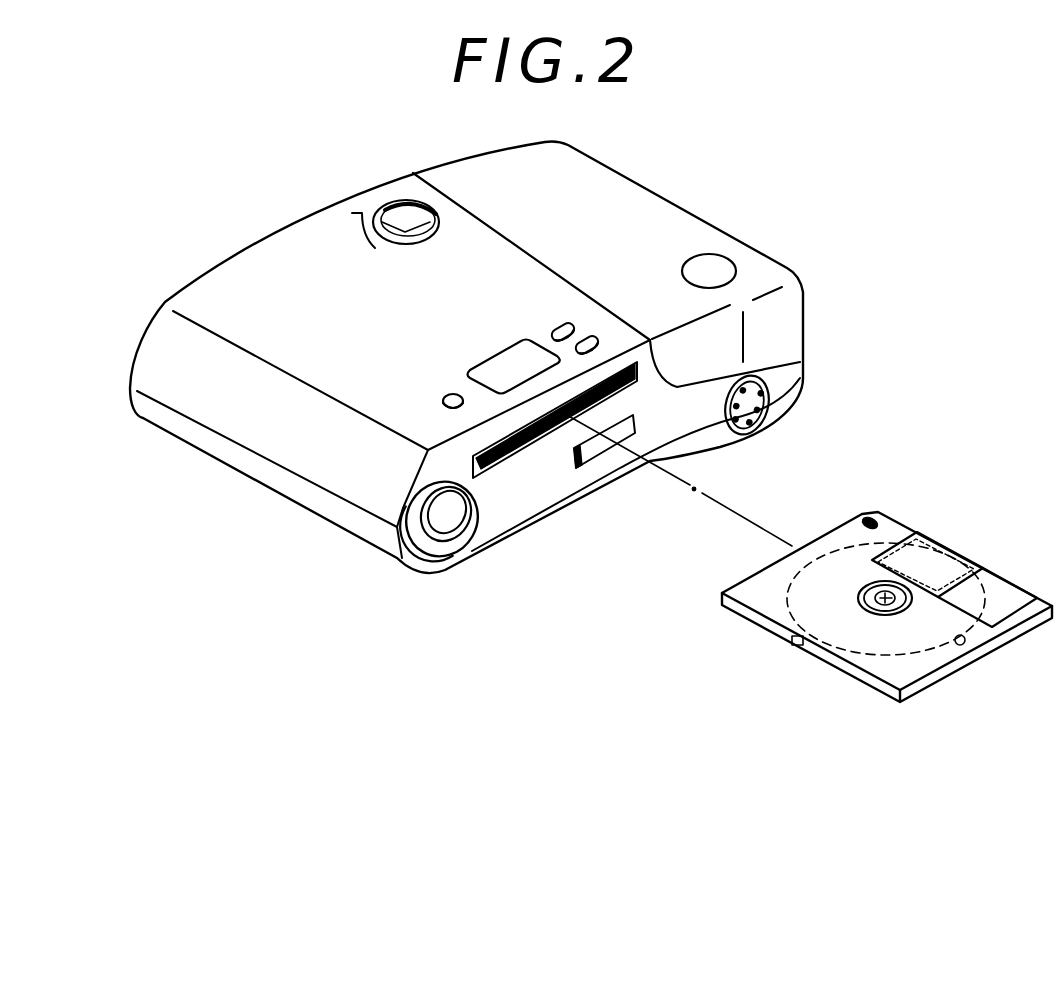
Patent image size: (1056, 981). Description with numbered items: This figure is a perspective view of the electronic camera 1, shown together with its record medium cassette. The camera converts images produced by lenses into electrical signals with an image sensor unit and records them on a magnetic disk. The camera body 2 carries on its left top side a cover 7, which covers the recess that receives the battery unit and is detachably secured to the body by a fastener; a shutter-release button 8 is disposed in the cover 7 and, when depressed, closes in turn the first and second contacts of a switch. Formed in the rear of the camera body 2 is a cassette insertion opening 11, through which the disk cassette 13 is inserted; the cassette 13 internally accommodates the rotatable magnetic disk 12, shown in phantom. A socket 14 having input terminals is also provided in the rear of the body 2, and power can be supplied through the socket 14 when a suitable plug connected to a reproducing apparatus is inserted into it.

The electronic camera 1 is at (869, 285).
The camera body 2 is at (318, 232).
The cover 7 is at (672, 208).
The shutter-release button 8 is at (716, 258).
The cassette insertion opening 11 is at (489, 446).
The magnetic disk 12 is at (757, 613).
The disk cassette 13 is at (908, 528).
The socket 14 is at (768, 408).